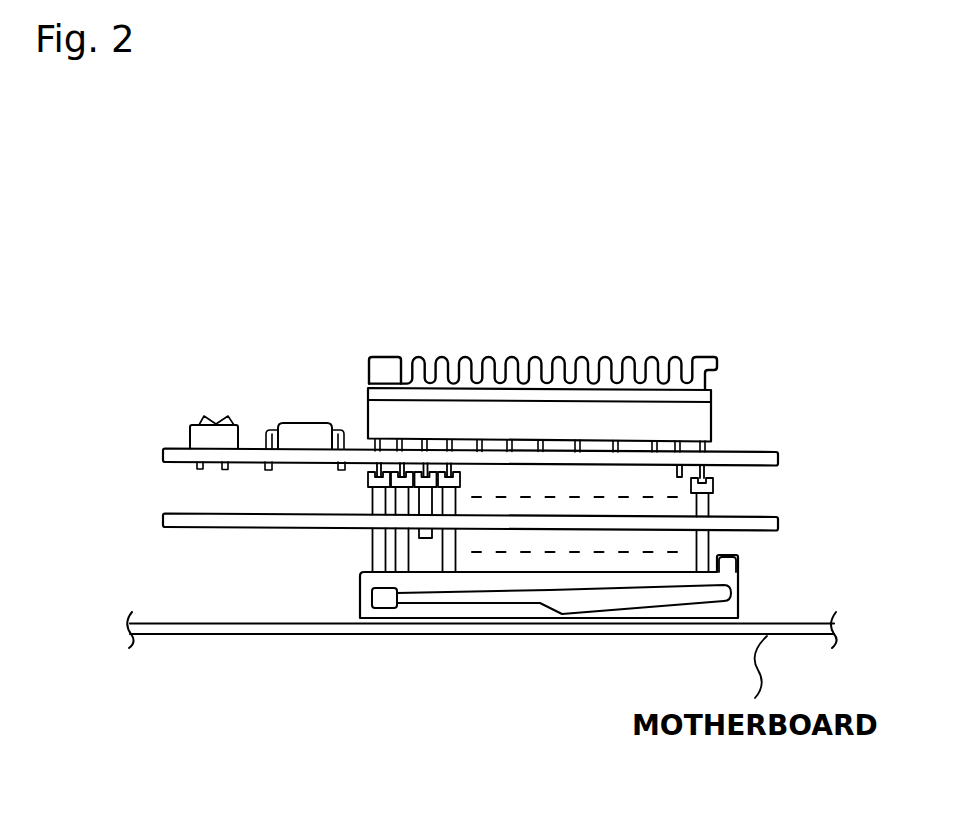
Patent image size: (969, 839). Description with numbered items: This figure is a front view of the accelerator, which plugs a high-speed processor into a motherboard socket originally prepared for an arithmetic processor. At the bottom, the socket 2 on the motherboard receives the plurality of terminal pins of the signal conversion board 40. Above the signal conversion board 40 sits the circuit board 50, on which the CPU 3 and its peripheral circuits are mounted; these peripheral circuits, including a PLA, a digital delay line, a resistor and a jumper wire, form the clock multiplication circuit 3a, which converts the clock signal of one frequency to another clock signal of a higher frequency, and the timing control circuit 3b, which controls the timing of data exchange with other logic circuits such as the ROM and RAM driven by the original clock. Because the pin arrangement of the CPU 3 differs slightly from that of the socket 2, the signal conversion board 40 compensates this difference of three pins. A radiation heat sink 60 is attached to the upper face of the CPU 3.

The radiation heat sink 60 is at (702, 357).
The CPU 3 is at (691, 420).
The circuit board 50 is at (768, 452).
The signal conversion board 40 is at (768, 517).
The socket 2 is at (360, 578).
The clock multiplication circuit 3a is at (240, 383).
The timing control circuit 3b is at (305, 446).